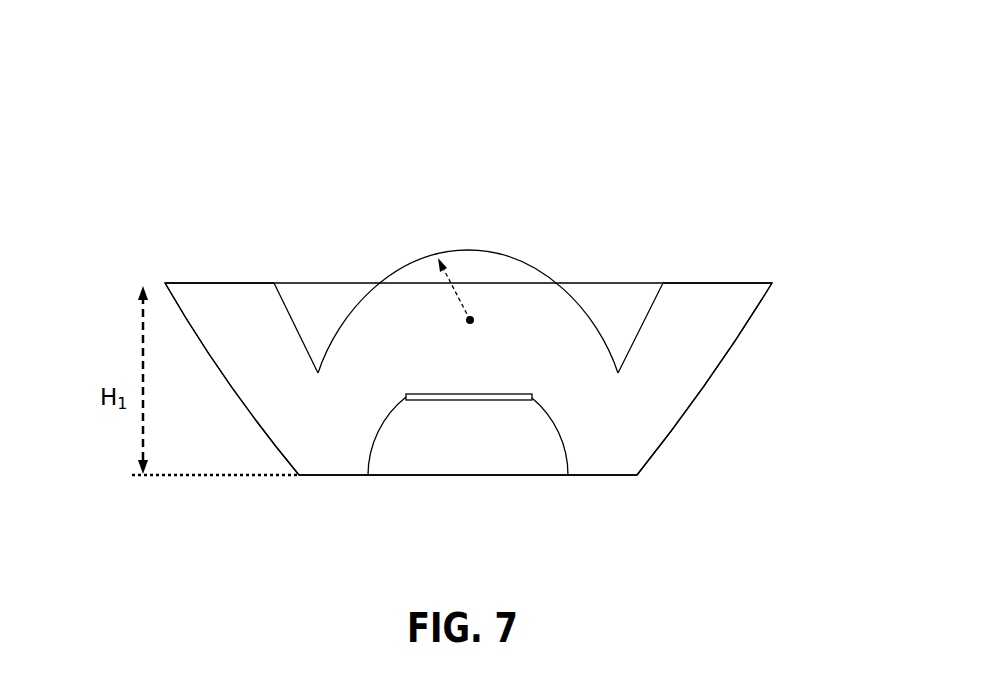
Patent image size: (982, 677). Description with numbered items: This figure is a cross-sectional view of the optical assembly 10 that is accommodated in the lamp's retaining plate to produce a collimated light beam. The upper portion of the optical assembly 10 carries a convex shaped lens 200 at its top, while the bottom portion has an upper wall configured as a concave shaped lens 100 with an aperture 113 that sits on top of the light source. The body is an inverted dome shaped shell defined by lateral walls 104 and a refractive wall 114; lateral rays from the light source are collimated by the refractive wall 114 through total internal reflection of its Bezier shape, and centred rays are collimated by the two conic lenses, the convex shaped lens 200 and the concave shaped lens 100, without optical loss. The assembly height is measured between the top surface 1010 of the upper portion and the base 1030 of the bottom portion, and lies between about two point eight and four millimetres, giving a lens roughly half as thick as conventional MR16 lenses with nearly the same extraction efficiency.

The optical assembly 10 is at (167, 77).
The top surface 1010 is at (207, 283).
The convex shaped lens 200 is at (487, 250).
The lateral walls 104 is at (633, 340).
The refractive wall 114 is at (755, 317).
The concave shaped lens 100 is at (431, 402).
The aperture 113 is at (502, 423).
The base 1030 is at (368, 476).